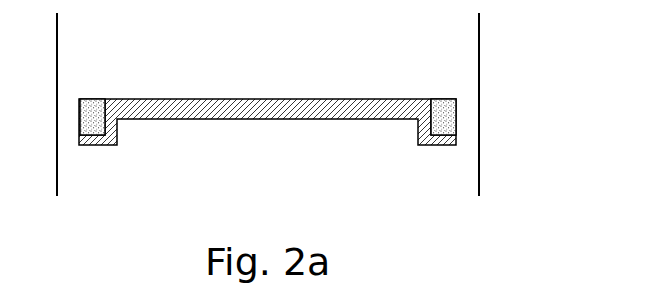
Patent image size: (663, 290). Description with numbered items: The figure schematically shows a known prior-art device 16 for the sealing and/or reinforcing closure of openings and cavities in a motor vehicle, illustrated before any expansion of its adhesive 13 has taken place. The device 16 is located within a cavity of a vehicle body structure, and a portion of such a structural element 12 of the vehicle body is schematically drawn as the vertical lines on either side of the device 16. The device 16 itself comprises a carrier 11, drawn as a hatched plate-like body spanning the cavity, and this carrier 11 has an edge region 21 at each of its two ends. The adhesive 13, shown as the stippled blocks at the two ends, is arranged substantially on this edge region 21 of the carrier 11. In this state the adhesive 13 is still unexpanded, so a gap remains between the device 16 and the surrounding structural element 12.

The carrier 11 is at (262, 110).
The structural element 12 is at (331, 118).
The adhesive 13 is at (91, 99).
The device 16 is at (267, 115).
The edge region 21 is at (93, 145).